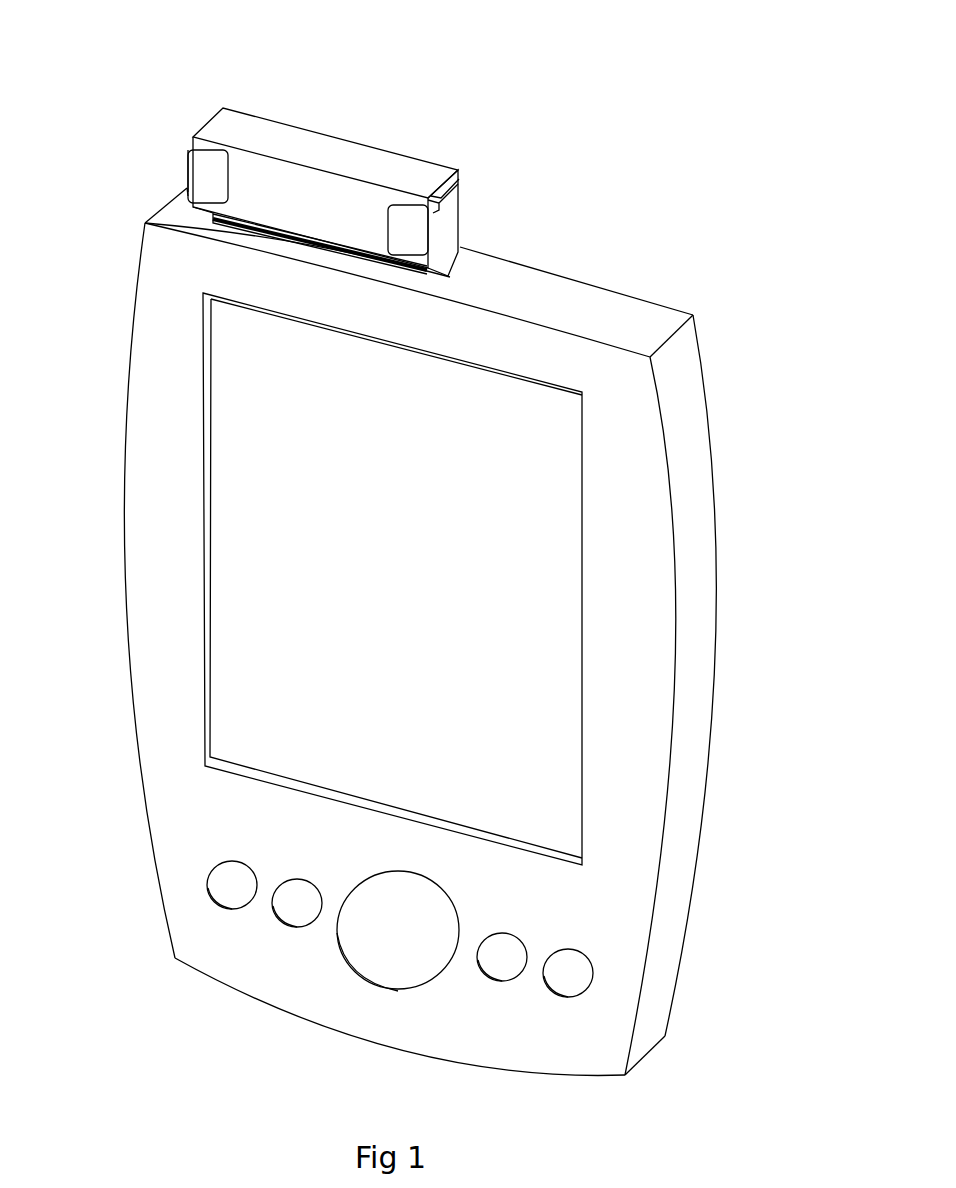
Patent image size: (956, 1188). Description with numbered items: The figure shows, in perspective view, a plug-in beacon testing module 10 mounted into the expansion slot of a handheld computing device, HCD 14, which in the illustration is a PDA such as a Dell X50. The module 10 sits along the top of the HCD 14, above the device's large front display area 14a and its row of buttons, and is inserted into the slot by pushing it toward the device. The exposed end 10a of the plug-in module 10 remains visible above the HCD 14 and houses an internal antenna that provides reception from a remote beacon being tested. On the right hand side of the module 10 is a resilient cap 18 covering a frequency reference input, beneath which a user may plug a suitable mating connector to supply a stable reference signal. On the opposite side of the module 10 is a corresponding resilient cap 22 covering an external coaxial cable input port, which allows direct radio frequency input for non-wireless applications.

The beacon testing module 10 is at (315, 144).
The exposed end of the plug-in module 10a is at (258, 130).
The HCD 14 is at (718, 455).
The display screen 14a is at (535, 688).
The right hand resilient cap 18 is at (450, 229).
The resilient cap 22 is at (185, 173).